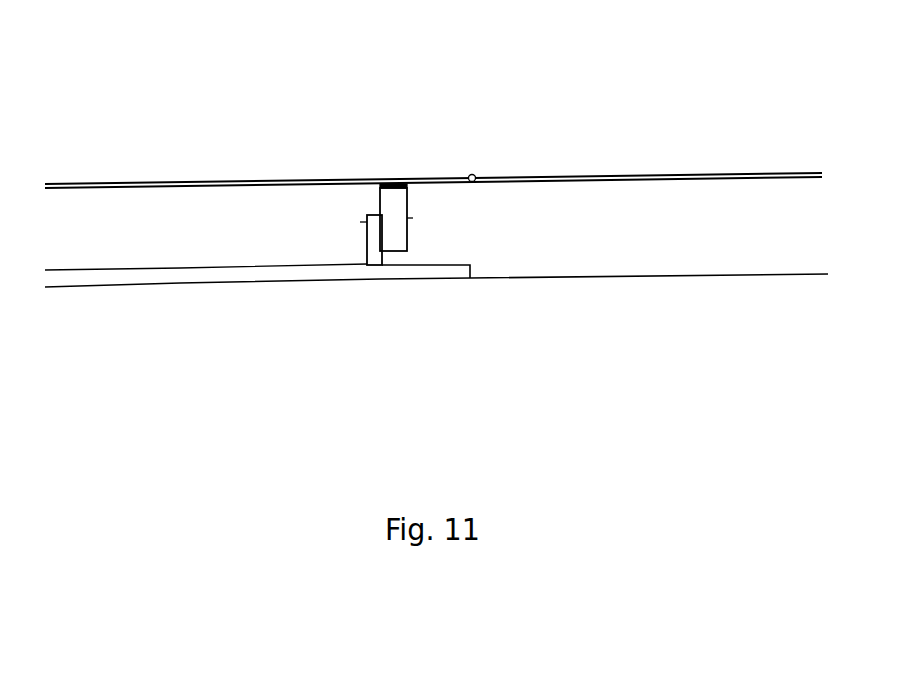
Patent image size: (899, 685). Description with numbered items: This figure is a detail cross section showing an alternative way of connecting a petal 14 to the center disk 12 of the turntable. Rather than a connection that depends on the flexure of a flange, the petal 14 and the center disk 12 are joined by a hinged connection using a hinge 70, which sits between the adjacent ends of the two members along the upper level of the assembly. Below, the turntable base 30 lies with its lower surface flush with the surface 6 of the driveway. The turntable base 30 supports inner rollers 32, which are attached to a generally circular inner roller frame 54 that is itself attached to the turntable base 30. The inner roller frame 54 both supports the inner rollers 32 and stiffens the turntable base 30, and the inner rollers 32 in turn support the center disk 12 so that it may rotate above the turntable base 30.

The center disk 12 is at (262, 177).
The petal 14 is at (695, 174).
The hinge 70 is at (473, 175).
The turntable base 30 is at (275, 283).
The surface of the driveway 6 is at (652, 275).
The inner rollers 32 is at (408, 232).
The inner roller frame 54 is at (363, 232).